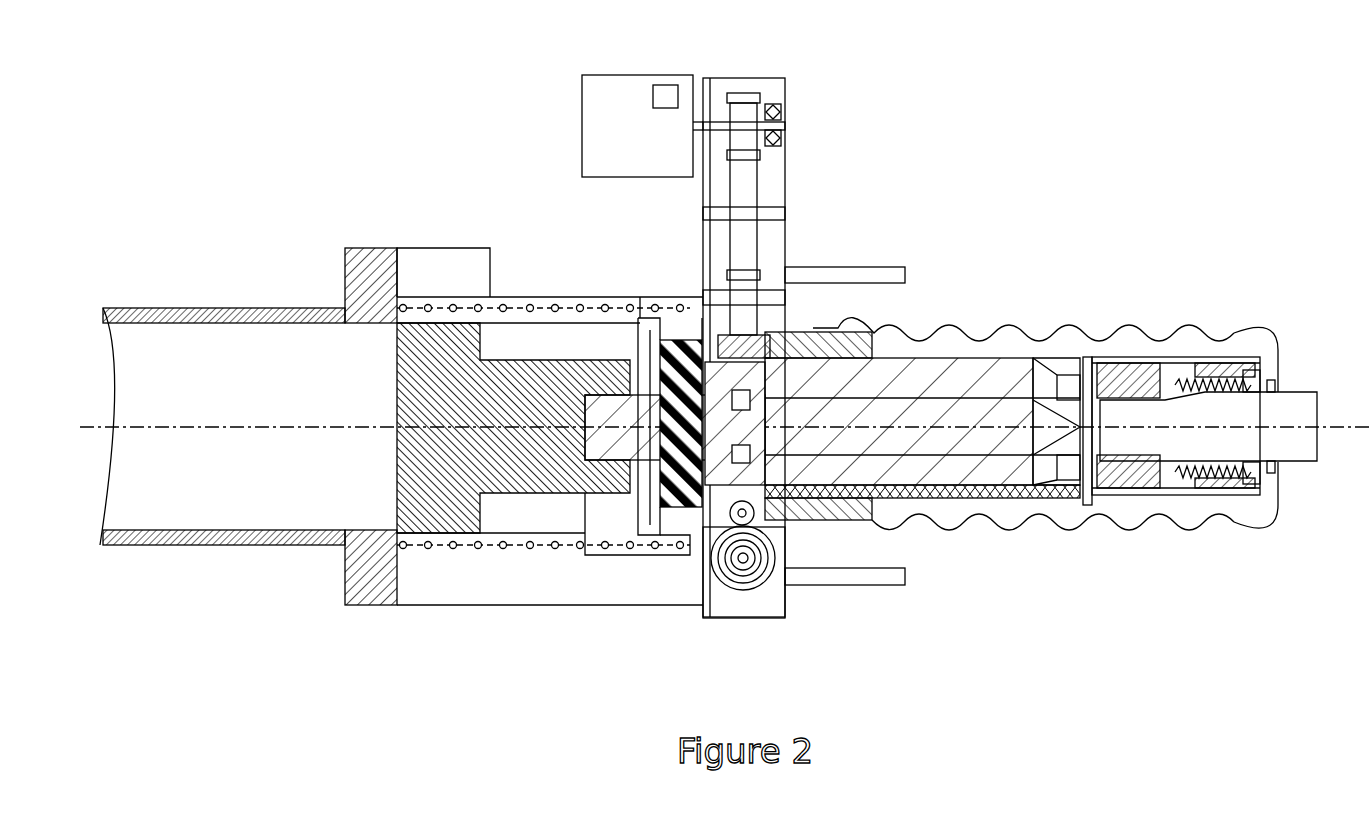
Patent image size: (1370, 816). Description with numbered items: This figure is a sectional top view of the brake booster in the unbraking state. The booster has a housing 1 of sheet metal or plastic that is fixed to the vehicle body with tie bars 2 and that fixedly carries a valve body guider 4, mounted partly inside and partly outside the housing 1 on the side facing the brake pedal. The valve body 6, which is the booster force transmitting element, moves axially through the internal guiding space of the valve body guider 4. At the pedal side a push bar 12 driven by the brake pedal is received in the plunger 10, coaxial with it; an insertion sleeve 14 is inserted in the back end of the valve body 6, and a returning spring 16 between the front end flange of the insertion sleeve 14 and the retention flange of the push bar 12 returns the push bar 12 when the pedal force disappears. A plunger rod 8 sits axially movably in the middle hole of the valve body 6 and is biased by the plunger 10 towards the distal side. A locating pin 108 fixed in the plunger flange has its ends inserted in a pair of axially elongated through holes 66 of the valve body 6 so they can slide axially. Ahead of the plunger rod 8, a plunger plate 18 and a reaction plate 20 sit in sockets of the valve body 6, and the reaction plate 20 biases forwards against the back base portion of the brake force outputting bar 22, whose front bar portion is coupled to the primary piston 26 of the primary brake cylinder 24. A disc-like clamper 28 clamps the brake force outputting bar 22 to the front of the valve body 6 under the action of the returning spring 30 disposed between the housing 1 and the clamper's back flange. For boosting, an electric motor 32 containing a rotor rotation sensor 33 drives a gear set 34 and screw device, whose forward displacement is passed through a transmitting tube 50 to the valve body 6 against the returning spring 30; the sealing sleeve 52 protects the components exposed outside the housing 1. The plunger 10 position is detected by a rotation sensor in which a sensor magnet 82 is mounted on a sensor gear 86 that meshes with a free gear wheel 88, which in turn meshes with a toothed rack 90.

The housing 1 is at (786, 78).
The tie bar 2 is at (847, 585).
The valve body guider 4 is at (875, 332).
The valve body 6 is at (987, 366).
The plunger rod 8 is at (979, 450).
The plunger 10 is at (1100, 480).
The push bar 12 is at (1297, 450).
The insertion sleeve 14 is at (1213, 485).
The returning spring 16 is at (1256, 472).
The plunger plate 18 is at (784, 345).
The reaction plate 20 is at (681, 338).
The brake force outputting bar 22 is at (607, 410).
The primary brake cylinder 24 is at (207, 512).
The primary piston 26 is at (508, 498).
The clamper 28 is at (636, 507).
The returning spring 30 is at (452, 306).
The electric motor 32 is at (582, 132).
The rotor rotation sensor 33 is at (673, 84).
The gear set 34 is at (768, 190).
The transmitting tube 50 is at (620, 312).
The sealing sleeve 52 is at (940, 530).
The through hole 66 is at (1073, 362).
The sensor magnet 82 is at (733, 590).
The sensor gear 86 is at (750, 590).
The free gear wheel 88 is at (786, 537).
The toothed rack 90 is at (1020, 498).
The locating pin 108 is at (1094, 470).